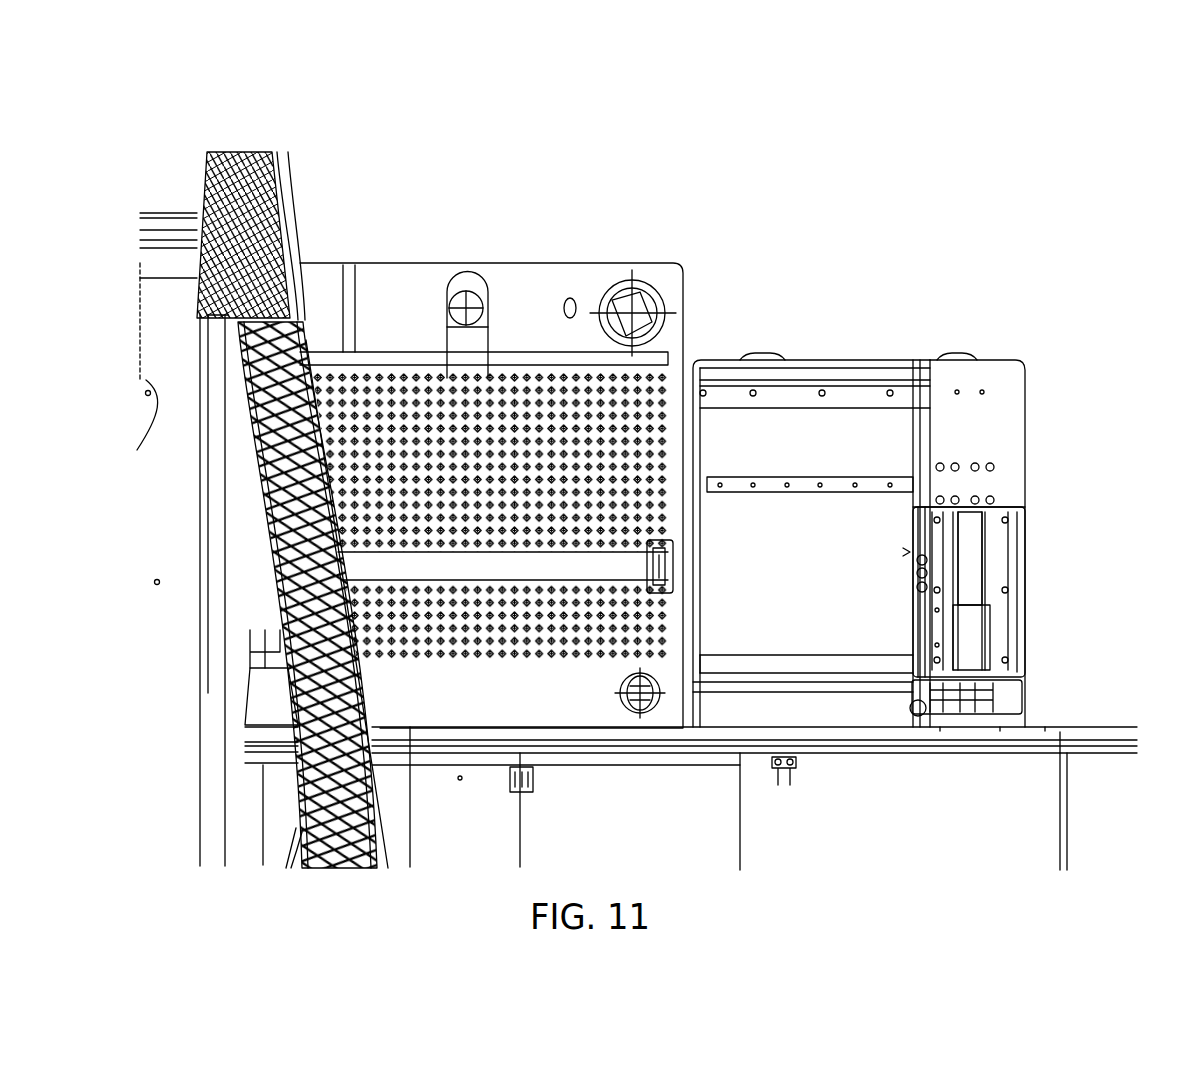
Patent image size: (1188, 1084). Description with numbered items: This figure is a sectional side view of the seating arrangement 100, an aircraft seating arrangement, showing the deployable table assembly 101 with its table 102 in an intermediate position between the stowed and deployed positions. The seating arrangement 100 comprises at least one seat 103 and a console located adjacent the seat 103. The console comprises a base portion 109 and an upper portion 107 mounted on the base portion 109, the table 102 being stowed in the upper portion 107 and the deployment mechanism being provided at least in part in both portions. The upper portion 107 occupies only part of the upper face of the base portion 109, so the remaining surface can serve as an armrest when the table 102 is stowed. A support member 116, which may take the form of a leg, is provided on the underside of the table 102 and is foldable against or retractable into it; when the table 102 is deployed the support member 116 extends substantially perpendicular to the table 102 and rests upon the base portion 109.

The seating arrangement 100 is at (580, 128).
The deployable table assembly 101 is at (908, 356).
The table 102 is at (773, 423).
The seat 103 is at (300, 195).
The upper portion 107 is at (683, 262).
The base portion 109 is at (1078, 730).
The support member 116 is at (925, 570).